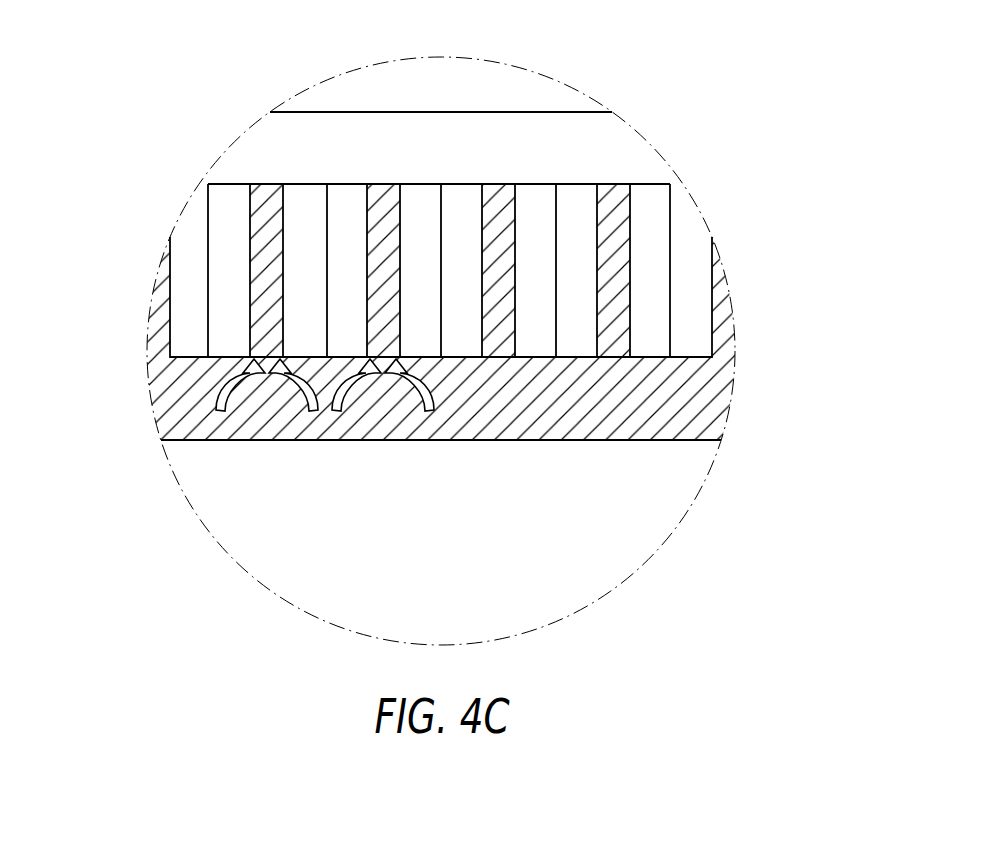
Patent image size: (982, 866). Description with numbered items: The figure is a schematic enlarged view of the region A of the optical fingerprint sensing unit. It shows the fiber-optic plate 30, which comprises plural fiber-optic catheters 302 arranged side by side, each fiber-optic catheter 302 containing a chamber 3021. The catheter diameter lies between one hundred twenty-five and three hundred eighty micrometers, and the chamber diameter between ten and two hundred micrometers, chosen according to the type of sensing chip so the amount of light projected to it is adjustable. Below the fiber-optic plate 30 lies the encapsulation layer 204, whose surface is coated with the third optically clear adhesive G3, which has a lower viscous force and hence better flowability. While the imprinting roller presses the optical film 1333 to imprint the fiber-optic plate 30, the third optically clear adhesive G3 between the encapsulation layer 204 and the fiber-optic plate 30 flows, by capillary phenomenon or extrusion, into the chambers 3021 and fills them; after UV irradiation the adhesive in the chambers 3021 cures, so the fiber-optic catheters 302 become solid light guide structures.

The optical film 1333 is at (325, 128).
The fiber-optic catheter 302 is at (670, 176).
The chamber 3021 is at (367, 305).
The third optically clear adhesive G3 is at (263, 213).
The region A is at (731, 300).
The encapsulation layer 204 is at (213, 505).
The fiber-optic plate 30 is at (462, 335).